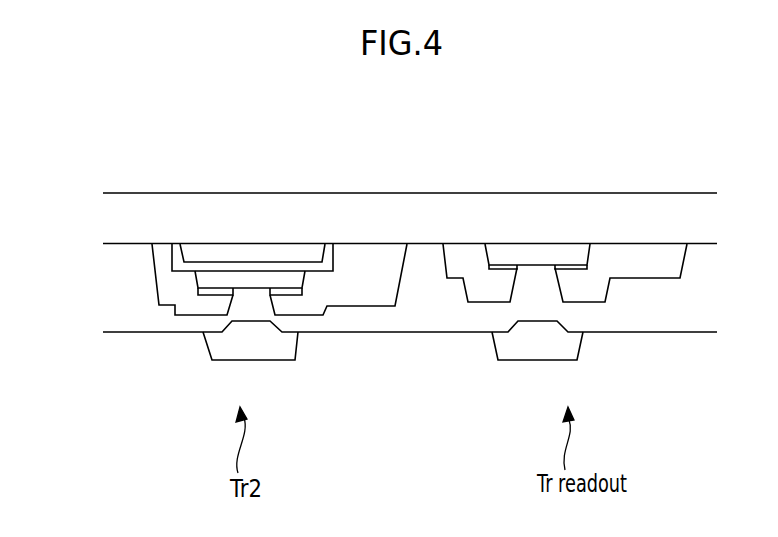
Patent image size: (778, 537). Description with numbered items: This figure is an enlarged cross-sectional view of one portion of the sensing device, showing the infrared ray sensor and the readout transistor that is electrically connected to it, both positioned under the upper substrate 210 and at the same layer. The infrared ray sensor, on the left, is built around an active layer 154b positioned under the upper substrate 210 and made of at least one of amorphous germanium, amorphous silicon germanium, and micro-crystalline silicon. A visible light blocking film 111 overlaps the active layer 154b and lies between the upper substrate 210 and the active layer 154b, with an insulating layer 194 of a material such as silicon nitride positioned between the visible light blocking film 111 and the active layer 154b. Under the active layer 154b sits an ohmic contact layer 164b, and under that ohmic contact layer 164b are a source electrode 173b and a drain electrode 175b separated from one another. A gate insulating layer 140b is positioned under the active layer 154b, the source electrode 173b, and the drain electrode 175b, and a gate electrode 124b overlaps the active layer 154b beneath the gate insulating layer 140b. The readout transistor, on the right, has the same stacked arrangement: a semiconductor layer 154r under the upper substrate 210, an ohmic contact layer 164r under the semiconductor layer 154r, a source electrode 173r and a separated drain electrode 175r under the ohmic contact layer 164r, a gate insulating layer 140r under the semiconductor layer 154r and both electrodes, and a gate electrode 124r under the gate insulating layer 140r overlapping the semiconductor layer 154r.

The upper substrate 210 is at (120, 215).
The visible light blocking film 111 is at (212, 252).
The active layer 154b is at (253, 277).
The insulating layer 194 is at (308, 267).
The source electrode 173b is at (165, 287).
The gate insulating layer 140b is at (115, 318).
The ohmic contact layer 164b is at (212, 292).
The gate electrode 124b is at (287, 350).
The drain electrode 175b is at (365, 288).
The source electrode 173r is at (465, 258).
The semiconductor layer 154r is at (538, 250).
The ohmic contact layer 164r is at (577, 263).
The drain electrode 175r is at (655, 255).
The gate electrode 124r is at (512, 350).
The gate insulating layer 140r is at (672, 317).